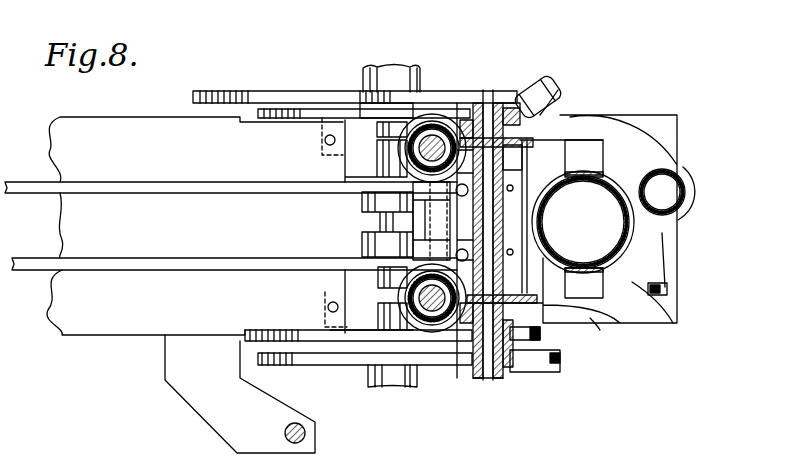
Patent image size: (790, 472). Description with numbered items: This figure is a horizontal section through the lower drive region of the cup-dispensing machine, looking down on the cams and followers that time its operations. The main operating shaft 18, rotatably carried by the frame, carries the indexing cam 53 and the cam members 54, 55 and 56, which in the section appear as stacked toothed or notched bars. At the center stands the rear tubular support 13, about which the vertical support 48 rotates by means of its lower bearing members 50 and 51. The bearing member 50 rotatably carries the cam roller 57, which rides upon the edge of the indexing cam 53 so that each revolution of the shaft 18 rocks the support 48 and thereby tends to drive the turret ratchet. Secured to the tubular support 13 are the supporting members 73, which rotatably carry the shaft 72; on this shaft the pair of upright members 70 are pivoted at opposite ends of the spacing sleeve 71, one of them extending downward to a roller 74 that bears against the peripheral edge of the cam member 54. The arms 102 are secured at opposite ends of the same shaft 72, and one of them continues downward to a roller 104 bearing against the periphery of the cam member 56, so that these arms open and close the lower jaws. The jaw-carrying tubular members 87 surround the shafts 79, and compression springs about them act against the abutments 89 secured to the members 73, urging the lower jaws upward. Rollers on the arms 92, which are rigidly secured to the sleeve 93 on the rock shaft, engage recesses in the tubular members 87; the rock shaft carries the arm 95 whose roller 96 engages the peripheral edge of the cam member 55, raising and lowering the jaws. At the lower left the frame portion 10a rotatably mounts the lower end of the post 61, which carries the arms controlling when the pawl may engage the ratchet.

The indexing cam 53 is at (260, 96).
The cam member 54 is at (298, 116).
The cam member 55 is at (270, 330).
The cam member 56 is at (270, 365).
The main operating shaft 18 is at (398, 389).
The frame portion 10a is at (227, 427).
The post 61 is at (306, 434).
The tubular members 87 is at (400, 157).
The abutments 89 is at (414, 117).
The shafts 79 is at (433, 140).
The arms 92 is at (465, 198).
The arms 102 is at (474, 103).
The shaft 72 is at (488, 100).
The upright members 70 is at (507, 128).
The roller 74 is at (512, 102).
The cam roller 57 is at (560, 84).
The supporting members 73 is at (527, 145).
The bearing member 50 is at (642, 152).
The vertical support 48 is at (687, 193).
The spacing sleeve 71 is at (505, 167).
The tubular support 13 is at (617, 192).
The sleeve 93 is at (515, 222).
The bearing member 51 is at (678, 323).
The arm 95 is at (606, 333).
The roller 96 is at (541, 333).
The roller 104 is at (575, 355).